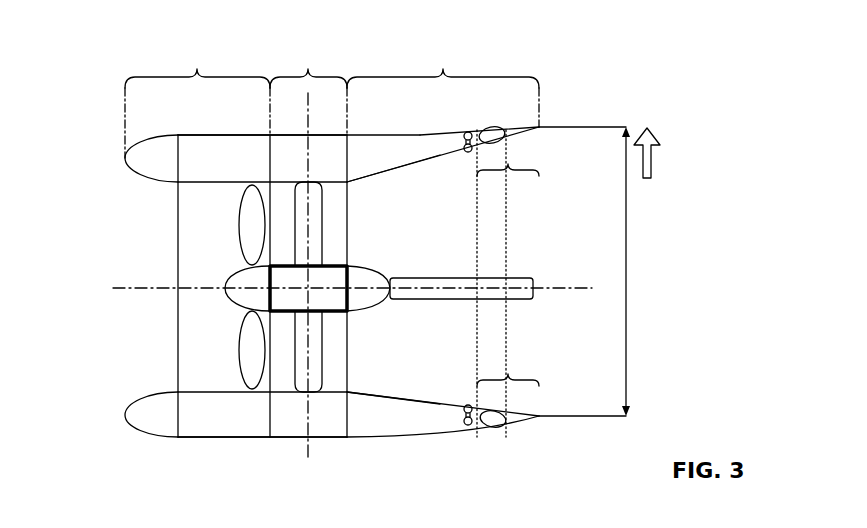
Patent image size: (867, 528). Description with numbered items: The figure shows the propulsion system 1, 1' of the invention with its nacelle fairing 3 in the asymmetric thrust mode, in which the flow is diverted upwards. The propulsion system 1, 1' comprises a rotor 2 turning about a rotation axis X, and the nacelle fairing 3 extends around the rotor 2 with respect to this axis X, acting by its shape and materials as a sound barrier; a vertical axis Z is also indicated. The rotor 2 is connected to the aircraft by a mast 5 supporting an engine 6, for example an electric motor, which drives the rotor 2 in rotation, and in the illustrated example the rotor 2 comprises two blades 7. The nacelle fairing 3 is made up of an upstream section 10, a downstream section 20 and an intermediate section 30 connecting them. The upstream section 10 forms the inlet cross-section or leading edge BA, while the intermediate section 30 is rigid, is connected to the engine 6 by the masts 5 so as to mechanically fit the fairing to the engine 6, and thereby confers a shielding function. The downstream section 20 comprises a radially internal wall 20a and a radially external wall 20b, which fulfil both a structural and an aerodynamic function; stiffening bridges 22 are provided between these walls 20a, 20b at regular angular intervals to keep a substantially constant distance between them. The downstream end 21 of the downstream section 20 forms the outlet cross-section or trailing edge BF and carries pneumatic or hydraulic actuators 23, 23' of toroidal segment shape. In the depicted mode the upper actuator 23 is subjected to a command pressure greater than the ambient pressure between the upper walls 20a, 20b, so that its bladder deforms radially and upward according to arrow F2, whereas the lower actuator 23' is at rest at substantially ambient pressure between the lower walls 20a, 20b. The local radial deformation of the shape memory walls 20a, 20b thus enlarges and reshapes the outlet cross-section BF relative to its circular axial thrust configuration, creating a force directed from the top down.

The propulsion system 1 is at (636, 83).
The propulsion system 1' is at (636, 83).
The rotor 2 is at (218, 294).
The nacelle fairing 3 is at (495, 45).
The mast 5 is at (310, 247).
The engine 6 is at (318, 293).
The blades 7 is at (255, 213).
The upstream section 10 is at (197, 237).
The downstream section 20 is at (332, 237).
The radially internal wall 20a is at (372, 182).
The radially external wall 20b is at (360, 135).
The downstream end 21 is at (508, 283).
The stiffening bridges 22 is at (466, 155).
The actuator 23 is at (522, 102).
The actuator 23' is at (504, 450).
The intermediate section 30 is at (308, 237).
The leading edge BA is at (118, 160).
The trailing edge BF is at (548, 133).
The arrow F2 is at (652, 152).
The rotation axis X is at (337, 288).
The vertical axis Z is at (319, 275).